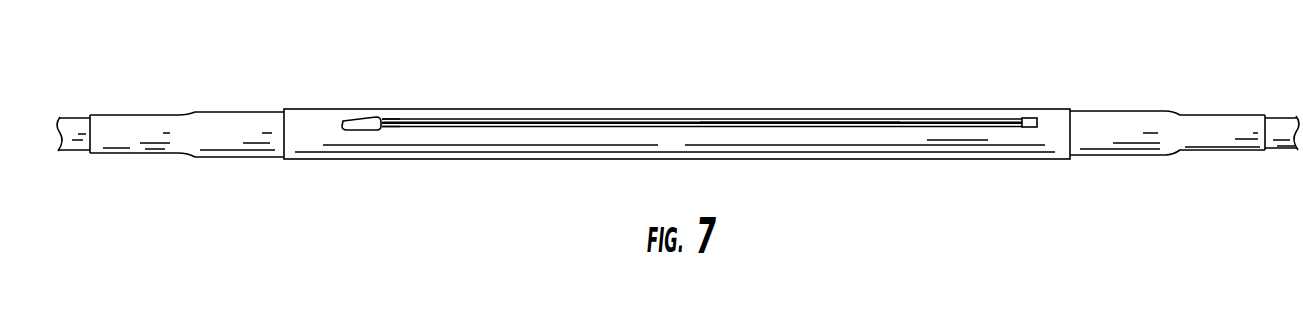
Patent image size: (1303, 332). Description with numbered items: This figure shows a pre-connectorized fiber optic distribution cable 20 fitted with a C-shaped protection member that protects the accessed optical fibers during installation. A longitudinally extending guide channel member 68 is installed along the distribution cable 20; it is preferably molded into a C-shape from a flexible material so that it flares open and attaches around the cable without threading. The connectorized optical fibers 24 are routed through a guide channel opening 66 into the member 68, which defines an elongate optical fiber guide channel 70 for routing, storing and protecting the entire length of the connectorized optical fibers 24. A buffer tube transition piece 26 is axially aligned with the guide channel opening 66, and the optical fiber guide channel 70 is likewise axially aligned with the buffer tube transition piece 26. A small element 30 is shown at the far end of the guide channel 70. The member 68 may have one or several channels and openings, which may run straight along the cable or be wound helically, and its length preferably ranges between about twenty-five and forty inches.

The distribution cable 20 is at (75, 118).
The guide channel member 68 is at (303, 109).
The connectorized optical fibers 24 is at (485, 123).
The buffer tube transition piece 26 is at (352, 117).
The guide channel opening 66 is at (373, 106).
The optical fiber guide channel 70 is at (791, 108).
The stop 30 is at (1030, 118).